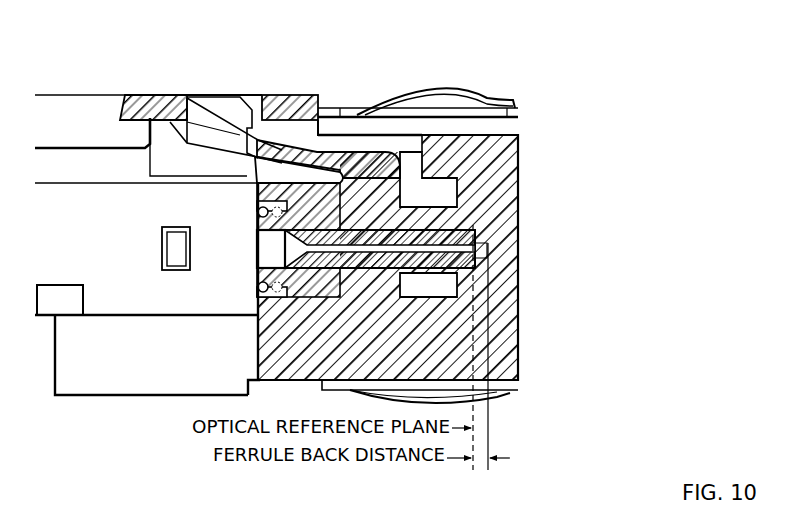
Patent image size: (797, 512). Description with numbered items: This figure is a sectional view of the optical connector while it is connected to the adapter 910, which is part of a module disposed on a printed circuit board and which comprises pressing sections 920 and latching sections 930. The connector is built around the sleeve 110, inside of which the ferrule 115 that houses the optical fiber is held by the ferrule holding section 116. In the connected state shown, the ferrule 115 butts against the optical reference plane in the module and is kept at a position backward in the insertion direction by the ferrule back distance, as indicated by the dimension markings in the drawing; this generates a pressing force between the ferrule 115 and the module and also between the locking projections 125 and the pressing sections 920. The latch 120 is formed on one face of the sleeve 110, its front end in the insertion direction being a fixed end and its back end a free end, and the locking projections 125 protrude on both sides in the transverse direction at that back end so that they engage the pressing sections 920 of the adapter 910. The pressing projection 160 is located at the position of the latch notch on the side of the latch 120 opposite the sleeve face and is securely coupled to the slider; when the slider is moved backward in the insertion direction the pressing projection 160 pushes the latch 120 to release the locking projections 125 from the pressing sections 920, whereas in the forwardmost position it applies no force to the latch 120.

The sleeve 110 is at (112, 290).
The ferrule 115 is at (445, 228).
The ferrule holding section 116 is at (250, 323).
The latch 120 is at (293, 150).
The locking projections 125 is at (201, 97).
The pressing projection 160 is at (236, 108).
The adapter 910 is at (250, 367).
The pressing sections 920 is at (150, 94).
The latching sections 930 is at (262, 98).